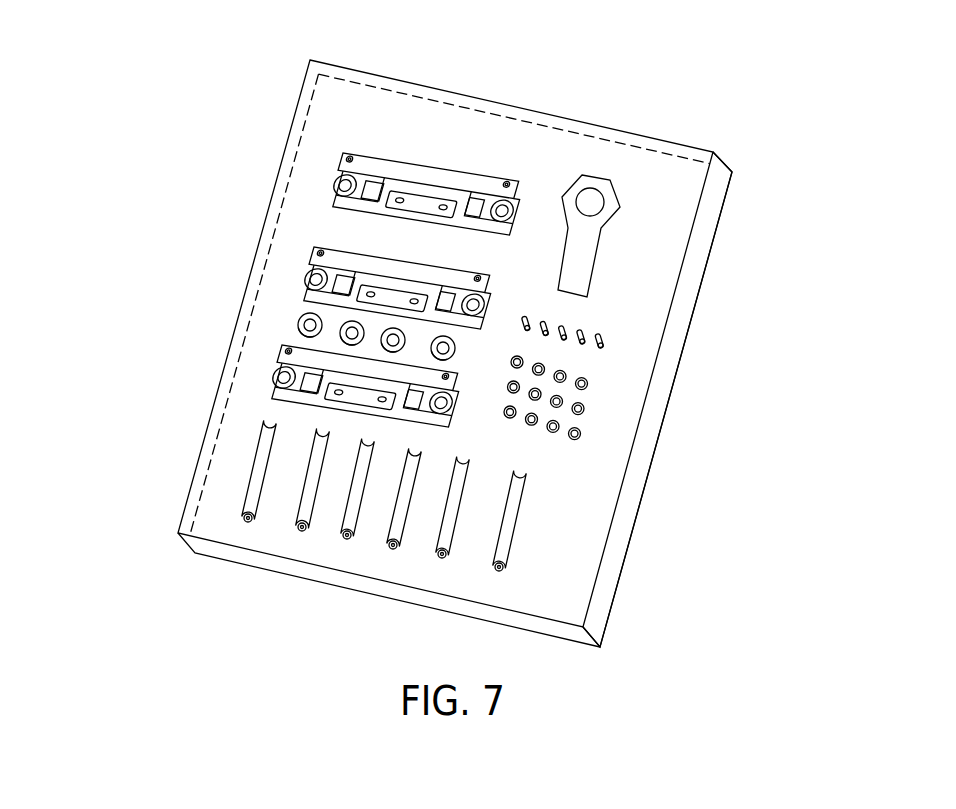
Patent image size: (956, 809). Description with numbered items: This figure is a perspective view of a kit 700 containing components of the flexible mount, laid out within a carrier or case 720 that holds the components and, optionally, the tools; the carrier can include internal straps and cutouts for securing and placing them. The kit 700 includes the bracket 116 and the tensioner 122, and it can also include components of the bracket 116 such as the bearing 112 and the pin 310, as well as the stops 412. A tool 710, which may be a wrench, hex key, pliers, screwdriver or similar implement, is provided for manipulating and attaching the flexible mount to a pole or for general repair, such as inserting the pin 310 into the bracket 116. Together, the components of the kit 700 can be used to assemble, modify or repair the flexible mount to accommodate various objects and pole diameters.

The kit 700 is at (221, 114).
The tool 710 is at (617, 190).
The carrier or case 720 is at (688, 291).
The bearing 112 is at (297, 314).
The bracket 116 is at (280, 358).
The tensioner 122 is at (257, 472).
The pin 310 is at (606, 341).
The stops 412 is at (581, 430).